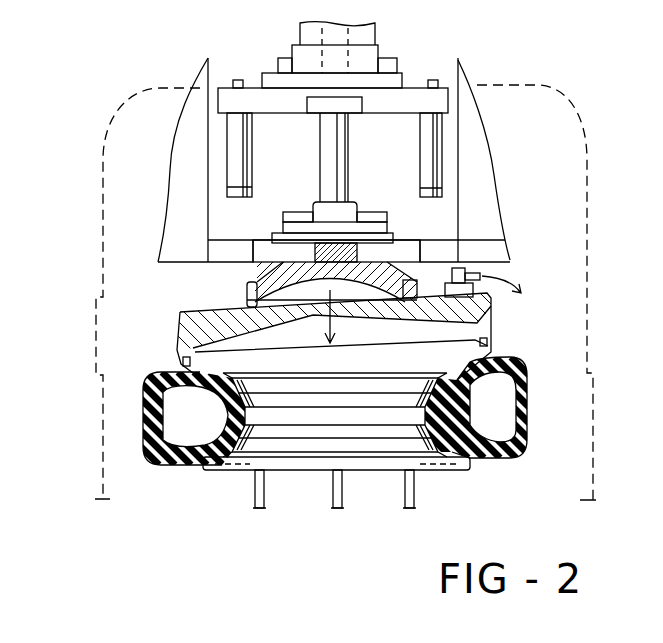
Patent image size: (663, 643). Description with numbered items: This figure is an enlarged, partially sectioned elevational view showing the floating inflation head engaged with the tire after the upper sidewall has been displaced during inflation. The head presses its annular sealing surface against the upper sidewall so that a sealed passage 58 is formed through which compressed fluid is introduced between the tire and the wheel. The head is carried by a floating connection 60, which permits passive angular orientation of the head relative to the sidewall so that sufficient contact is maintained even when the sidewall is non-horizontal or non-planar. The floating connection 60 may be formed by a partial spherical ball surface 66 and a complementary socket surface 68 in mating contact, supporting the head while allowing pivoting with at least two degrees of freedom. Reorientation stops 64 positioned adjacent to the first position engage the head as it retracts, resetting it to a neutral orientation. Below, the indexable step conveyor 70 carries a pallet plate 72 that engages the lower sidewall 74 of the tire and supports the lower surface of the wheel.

The sealed passage 58 is at (220, 408).
The floating connection 60 is at (232, 292).
The reorientation stop 64 is at (246, 165).
The spherical ball surface 66 is at (430, 264).
The complementary socket surface 68 is at (283, 283).
The indexable step conveyor 70 is at (251, 528).
The pallet plate 72 is at (447, 472).
The lower sidewall 74 is at (493, 466).